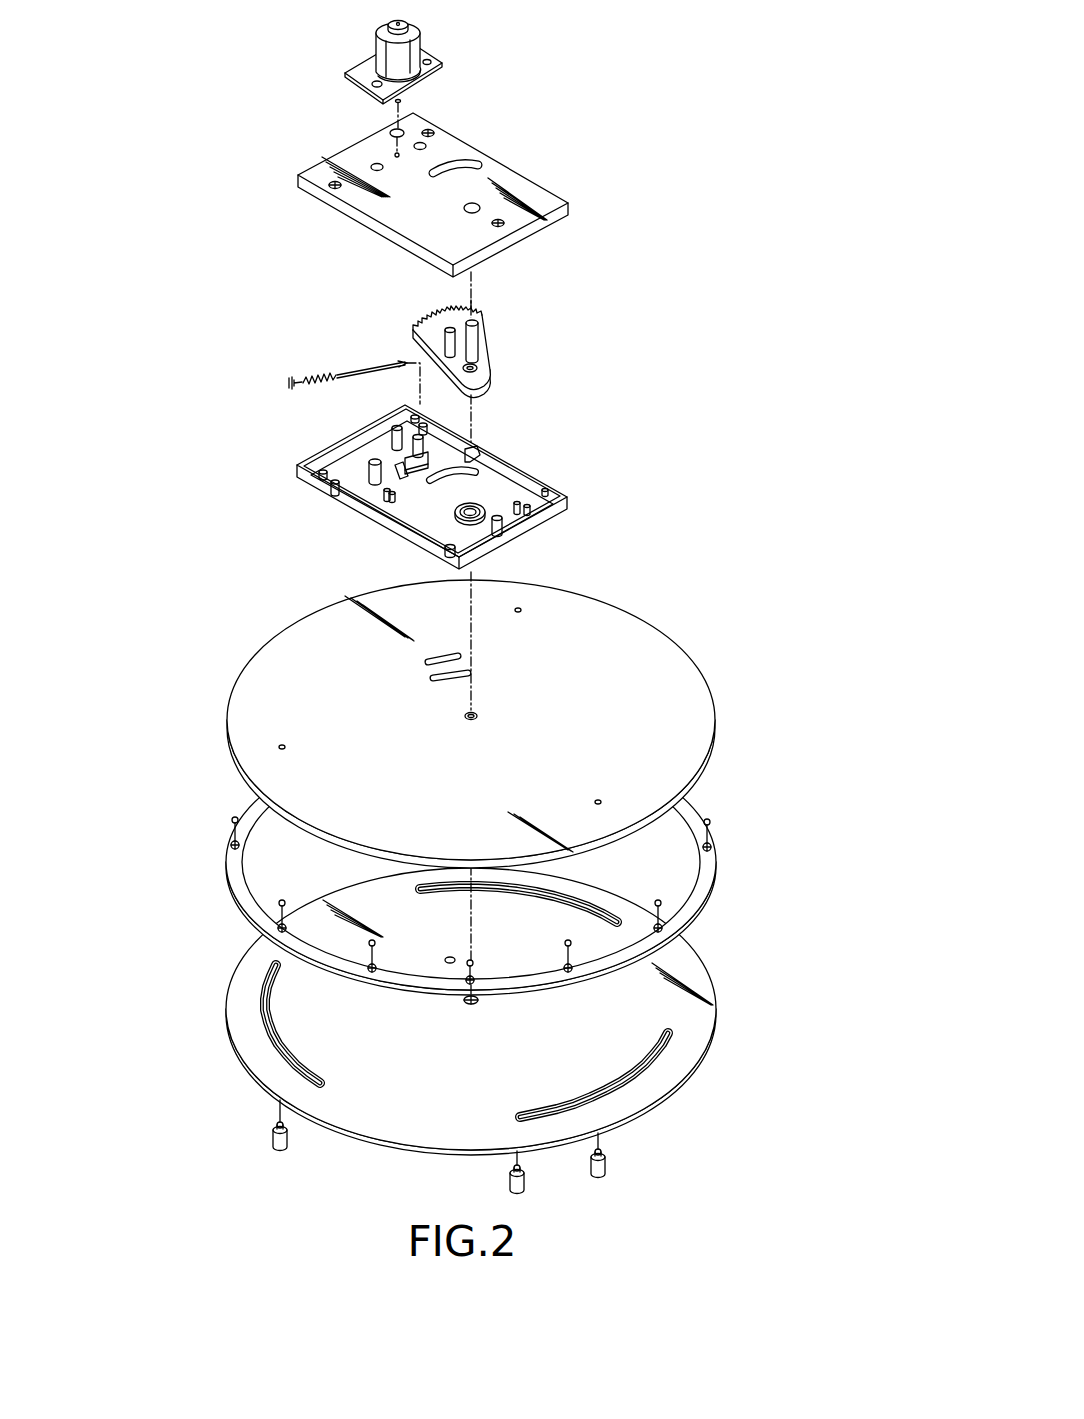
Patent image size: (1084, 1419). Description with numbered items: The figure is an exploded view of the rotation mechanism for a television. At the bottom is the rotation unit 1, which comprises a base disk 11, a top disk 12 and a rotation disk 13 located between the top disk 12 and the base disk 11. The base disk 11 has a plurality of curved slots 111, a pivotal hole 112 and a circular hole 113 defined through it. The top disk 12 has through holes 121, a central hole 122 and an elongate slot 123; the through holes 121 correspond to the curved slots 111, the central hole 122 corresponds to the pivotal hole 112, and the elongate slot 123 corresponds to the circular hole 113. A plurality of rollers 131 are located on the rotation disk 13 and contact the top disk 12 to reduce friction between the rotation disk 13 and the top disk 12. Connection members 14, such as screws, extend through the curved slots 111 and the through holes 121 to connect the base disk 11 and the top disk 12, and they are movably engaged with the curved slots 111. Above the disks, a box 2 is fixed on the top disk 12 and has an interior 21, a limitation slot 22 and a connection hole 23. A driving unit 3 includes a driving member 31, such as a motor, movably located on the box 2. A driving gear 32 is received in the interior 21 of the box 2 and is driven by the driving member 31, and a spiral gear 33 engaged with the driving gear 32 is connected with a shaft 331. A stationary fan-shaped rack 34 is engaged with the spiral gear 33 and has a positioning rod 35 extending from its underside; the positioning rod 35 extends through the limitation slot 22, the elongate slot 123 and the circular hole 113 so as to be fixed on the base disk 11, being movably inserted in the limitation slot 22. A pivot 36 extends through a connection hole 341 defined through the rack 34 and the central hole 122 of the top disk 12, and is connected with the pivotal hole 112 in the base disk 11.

The rotation unit 1 is at (727, 878).
The base disk 11 is at (717, 995).
The curved slots 111 is at (590, 888).
The pivotal hole 112 is at (470, 1004).
The circular hole 113 is at (448, 963).
The top disk 12 is at (292, 625).
The through holes 121 is at (598, 802).
The central hole 122 is at (475, 713).
The elongate slot 123 is at (477, 673).
The rotation disk 13 is at (703, 813).
The rollers 131 is at (572, 943).
The connection members 14 is at (607, 1158).
The box 2 is at (605, 183).
The interior 21 is at (498, 488).
The limitation slot 22 is at (470, 458).
The connection hole 23 is at (460, 515).
The driving unit 3 is at (270, 67).
The driving member 31 is at (413, 52).
The driving gear 32 is at (293, 376).
The spiral gear 33 is at (323, 378).
The shaft 331 is at (377, 375).
The fan-shaped rack 34 is at (485, 353).
The connection hole 341 is at (477, 371).
The positioning rod 35 is at (443, 340).
The pivot 36 is at (474, 334).